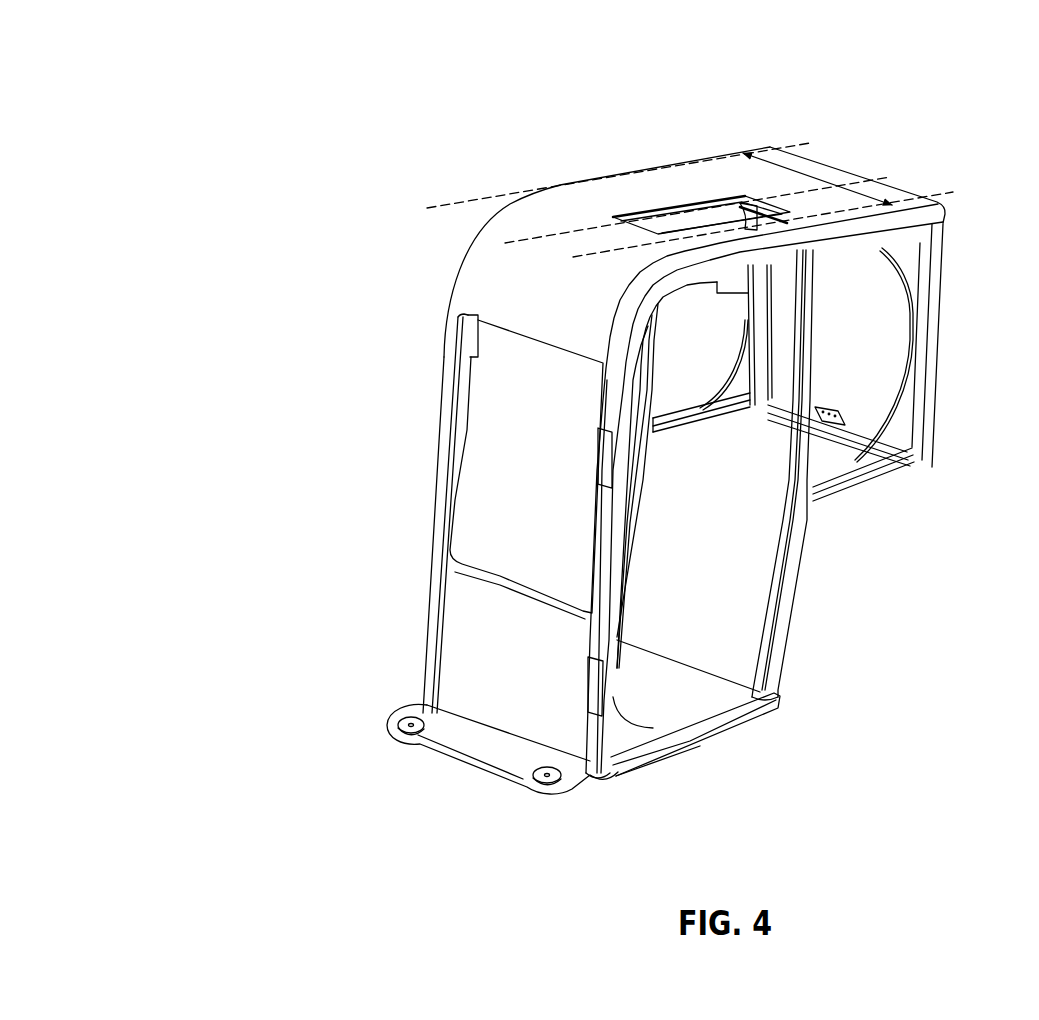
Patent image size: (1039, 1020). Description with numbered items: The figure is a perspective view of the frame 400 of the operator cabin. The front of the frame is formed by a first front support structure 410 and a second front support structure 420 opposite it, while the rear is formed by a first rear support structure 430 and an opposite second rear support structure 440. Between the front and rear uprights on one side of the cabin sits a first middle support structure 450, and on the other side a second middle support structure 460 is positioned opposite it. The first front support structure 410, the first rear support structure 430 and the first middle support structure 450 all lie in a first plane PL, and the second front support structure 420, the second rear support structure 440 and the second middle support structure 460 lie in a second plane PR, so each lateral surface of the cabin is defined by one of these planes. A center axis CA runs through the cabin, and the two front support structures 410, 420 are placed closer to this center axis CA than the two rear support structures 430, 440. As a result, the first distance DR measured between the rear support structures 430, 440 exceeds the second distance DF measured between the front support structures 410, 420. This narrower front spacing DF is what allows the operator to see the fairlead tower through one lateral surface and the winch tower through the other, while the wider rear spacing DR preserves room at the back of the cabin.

The cab frame assembly 400 is at (236, 40).
The first front support structure 410 is at (607, 510).
The second front support structure 420 is at (458, 388).
The first rear support structure 430 is at (935, 347).
The second rear support structure 440 is at (765, 327).
The first middle support structure 450 is at (806, 507).
The second middle support structure 460 is at (647, 467).
The second distance DF is at (513, 735).
The second plane PR is at (790, 140).
The first plane PL is at (953, 193).
The center axis CA is at (887, 175).
The first distance DR is at (815, 178).